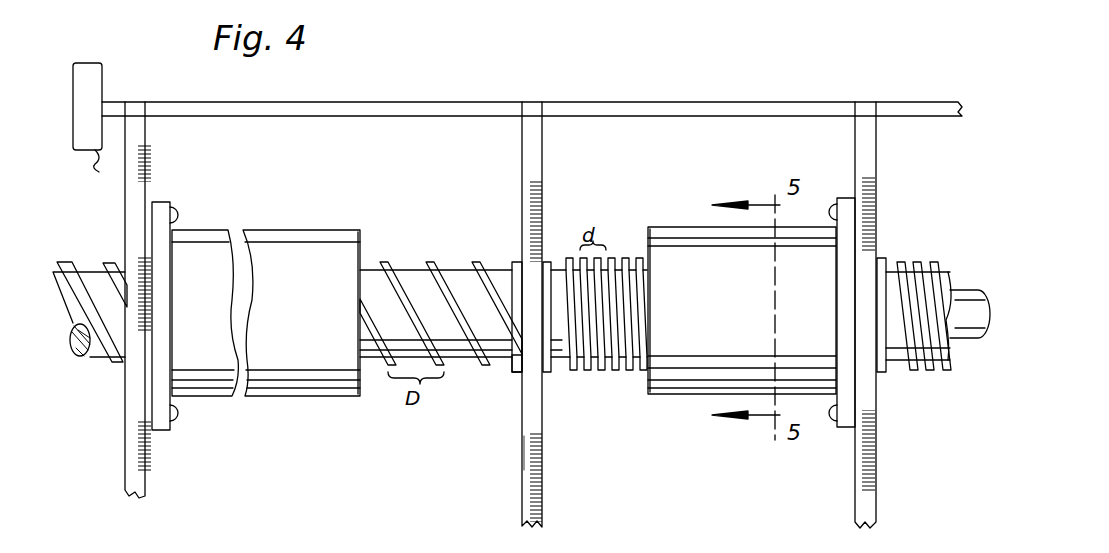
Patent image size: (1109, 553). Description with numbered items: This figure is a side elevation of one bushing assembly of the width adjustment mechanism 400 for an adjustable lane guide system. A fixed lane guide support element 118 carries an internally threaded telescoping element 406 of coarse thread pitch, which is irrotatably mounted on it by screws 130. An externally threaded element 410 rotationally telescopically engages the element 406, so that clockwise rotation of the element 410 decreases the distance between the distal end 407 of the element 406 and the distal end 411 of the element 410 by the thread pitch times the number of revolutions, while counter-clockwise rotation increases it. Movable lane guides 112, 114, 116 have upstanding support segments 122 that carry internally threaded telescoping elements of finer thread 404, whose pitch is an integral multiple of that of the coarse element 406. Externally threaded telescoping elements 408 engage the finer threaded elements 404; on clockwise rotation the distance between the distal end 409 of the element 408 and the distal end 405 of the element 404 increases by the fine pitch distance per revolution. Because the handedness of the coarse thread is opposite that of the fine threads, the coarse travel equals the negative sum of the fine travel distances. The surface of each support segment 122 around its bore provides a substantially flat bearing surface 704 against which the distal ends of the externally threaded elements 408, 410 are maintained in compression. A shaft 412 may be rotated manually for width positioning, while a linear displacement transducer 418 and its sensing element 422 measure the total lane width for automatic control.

The sensing element 422 is at (100, 62).
The width adjustment mechanism 400 is at (168, 95).
The linear displacement transducer 418 is at (378, 72).
The fixed lane guide support element 118 is at (152, 470).
The screws 130 is at (180, 215).
The internally threaded telescoping element 406 is at (335, 372).
The distal end of internally threaded telescoping element 407 is at (350, 262).
The externally threaded element 410 is at (405, 270).
The distal end of externally threaded telescoping element 411 is at (514, 264).
The lane guide 116 is at (545, 497).
The upstanding support segment 122 is at (543, 440).
The bearing surface 704 is at (520, 372).
The distal end of externally threaded elements 409 is at (552, 262).
The externally threaded telescoping elements 408 is at (612, 357).
The internally threaded telescoping elements of finer thread 404 is at (676, 238).
The distal end of internally threaded telescoping elements 405 is at (653, 285).
The lane guide 112 is at (855, 468).
The lane guide 114 is at (855, 505).
The shaft 412 is at (962, 292).